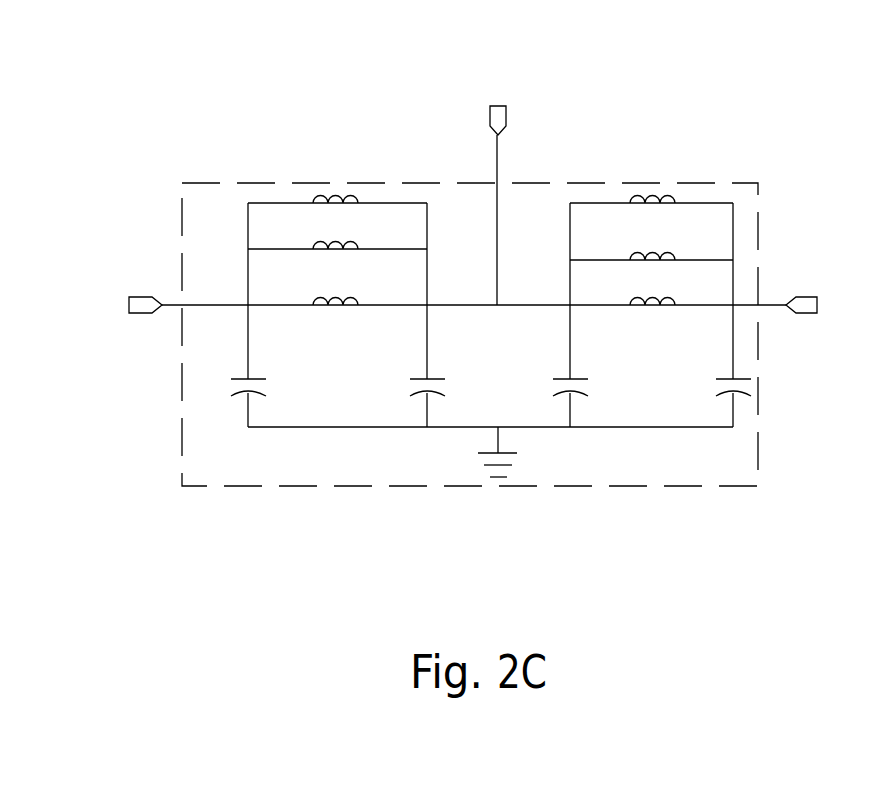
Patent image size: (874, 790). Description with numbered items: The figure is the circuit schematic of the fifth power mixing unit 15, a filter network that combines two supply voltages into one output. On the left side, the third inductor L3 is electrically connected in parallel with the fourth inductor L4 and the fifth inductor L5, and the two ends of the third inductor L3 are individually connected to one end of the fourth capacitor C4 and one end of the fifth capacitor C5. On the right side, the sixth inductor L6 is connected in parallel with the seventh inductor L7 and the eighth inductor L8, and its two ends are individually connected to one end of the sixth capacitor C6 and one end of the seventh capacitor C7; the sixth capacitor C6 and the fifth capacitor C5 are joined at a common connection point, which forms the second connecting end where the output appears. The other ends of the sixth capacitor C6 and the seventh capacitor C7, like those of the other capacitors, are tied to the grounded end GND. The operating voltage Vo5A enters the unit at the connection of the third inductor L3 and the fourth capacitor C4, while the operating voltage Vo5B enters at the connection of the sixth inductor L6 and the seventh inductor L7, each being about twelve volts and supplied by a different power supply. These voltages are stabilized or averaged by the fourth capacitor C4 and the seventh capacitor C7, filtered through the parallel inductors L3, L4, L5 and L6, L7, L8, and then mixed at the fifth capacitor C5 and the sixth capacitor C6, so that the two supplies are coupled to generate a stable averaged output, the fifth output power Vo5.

The fifth power mixing unit 15 is at (262, 183).
The third inductor L3 is at (335, 317).
The fourth inductor L4 is at (335, 261).
The fifth inductor L5 is at (335, 215).
The sixth inductor L6 is at (652, 317).
The seventh inductor L7 is at (652, 266).
The eighth inductor L8 is at (652, 215).
The fourth capacitor C4 is at (233, 385).
The fifth capacitor C5 is at (411, 385).
The sixth capacitor C6 is at (555, 385).
The seventh capacitor C7 is at (714, 385).
The fifth output power Vo5 is at (515, 198).
The operating voltage Vo5A is at (131, 293).
The operating voltage Vo5B is at (814, 293).
The grounded end GND is at (497, 453).